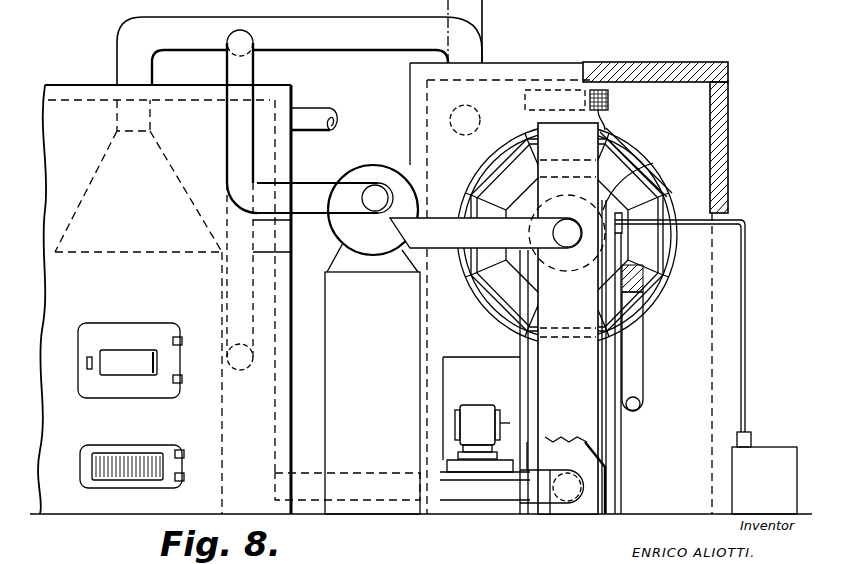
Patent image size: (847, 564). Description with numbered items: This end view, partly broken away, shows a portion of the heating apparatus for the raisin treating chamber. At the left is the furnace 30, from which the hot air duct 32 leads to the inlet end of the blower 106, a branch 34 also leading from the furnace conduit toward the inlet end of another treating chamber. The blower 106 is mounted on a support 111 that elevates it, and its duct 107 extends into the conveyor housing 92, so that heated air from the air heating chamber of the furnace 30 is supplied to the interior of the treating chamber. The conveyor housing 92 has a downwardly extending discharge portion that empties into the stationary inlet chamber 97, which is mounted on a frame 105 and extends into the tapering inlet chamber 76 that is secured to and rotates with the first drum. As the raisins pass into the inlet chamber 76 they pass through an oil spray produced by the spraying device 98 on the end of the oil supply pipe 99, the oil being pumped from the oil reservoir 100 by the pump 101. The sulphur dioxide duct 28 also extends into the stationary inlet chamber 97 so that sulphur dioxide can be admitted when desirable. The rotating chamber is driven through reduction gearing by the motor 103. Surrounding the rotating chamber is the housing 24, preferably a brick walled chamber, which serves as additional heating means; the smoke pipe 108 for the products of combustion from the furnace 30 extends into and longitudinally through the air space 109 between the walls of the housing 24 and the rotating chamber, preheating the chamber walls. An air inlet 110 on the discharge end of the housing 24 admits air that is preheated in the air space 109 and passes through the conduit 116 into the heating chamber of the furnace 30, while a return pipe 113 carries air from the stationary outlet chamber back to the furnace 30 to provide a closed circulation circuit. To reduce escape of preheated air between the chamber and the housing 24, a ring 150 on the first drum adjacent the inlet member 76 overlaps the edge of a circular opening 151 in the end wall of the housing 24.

The housing 24 is at (589, 274).
The sulphur dioxide duct 28 is at (637, 345).
The furnace 30 is at (170, 92).
The hot air duct 32 is at (291, 144).
The branch 34 is at (328, 113).
The tapering inlet chamber 76 is at (620, 168).
The conveyor housing 92 is at (557, 272).
The stationary inlet chamber 97 is at (615, 187).
The spraying device 98 is at (652, 182).
The oil supply pipe 99 is at (743, 340).
The oil reservoir 100 is at (755, 461).
The pump 101 is at (751, 440).
The motor 103 is at (473, 415).
The frame 105 is at (620, 455).
The blower 106 is at (368, 172).
The duct 107 is at (428, 230).
The smoke pipe 108 is at (338, 28).
The air space 109 is at (673, 95).
The air inlet 110 is at (602, 90).
The support 111 is at (407, 347).
The return pipe 113 is at (303, 243).
The conduit 116 is at (433, 492).
The ring 150 is at (512, 135).
The circular opening 151 is at (481, 159).